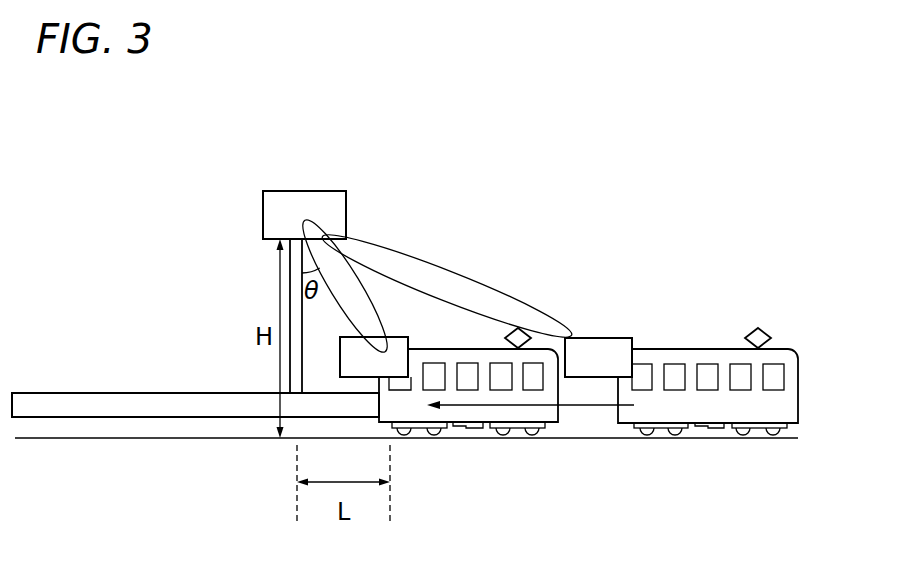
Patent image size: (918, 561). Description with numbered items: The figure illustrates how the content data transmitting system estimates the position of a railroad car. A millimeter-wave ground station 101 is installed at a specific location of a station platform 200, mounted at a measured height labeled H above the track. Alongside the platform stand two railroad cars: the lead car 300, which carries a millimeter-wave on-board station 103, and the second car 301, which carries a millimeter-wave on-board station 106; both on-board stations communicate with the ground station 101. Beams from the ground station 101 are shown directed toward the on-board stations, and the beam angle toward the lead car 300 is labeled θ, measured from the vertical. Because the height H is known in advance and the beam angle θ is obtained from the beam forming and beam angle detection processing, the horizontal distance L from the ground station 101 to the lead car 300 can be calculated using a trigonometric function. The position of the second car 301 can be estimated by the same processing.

The millimeter-wave ground station 101 is at (305, 191).
The millimeter-wave on-board station 103 is at (398, 335).
The millimeter-wave on-board station 106 is at (601, 338).
The station platform 200 is at (100, 393).
The railroad car 300 is at (558, 413).
The railroad car 301 is at (798, 388).